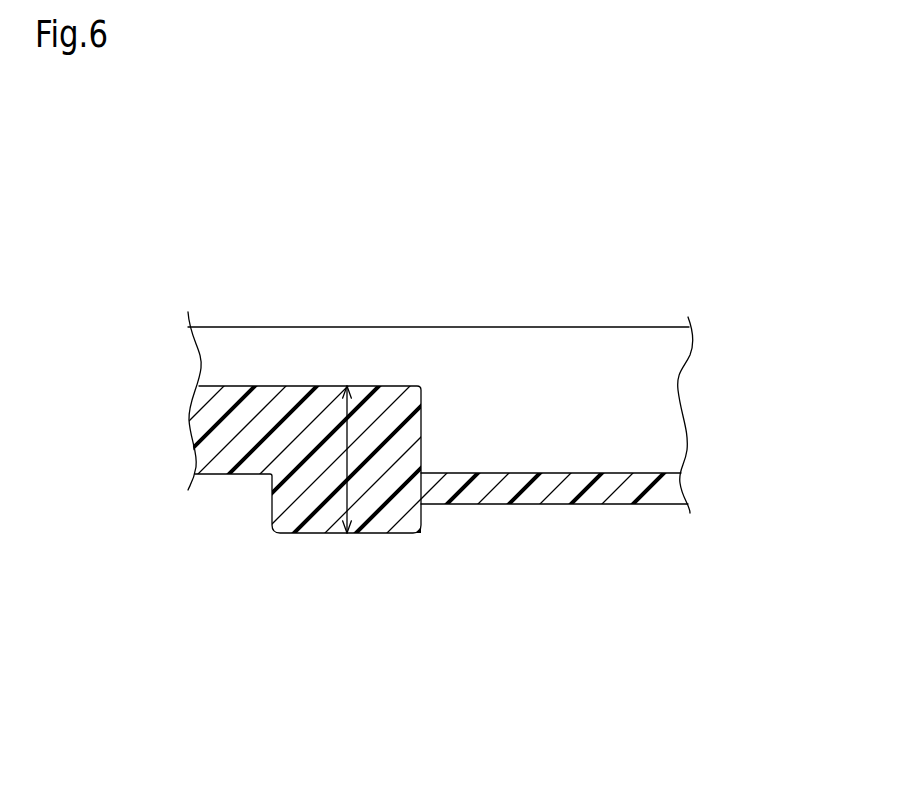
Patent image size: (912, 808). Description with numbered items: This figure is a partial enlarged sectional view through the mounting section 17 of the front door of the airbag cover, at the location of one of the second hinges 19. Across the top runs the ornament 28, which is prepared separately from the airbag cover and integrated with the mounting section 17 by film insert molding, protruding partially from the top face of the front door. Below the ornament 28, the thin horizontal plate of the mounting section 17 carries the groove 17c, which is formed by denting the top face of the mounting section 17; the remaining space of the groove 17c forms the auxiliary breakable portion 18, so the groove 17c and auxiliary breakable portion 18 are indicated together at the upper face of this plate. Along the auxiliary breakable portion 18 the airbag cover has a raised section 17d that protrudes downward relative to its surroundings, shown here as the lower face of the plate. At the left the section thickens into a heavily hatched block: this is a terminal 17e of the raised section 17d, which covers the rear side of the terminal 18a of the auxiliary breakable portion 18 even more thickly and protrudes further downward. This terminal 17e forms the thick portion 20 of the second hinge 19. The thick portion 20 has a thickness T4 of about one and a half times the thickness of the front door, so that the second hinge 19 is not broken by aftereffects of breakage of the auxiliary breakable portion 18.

The ornament 28 is at (562, 322).
The second hinge 19 is at (293, 368).
The thick portion 20 is at (289, 522).
The terminal of raised section 17e is at (262, 612).
The thickness of thick portion T4 is at (347, 467).
The terminal of auxiliary breakable portion 18a is at (421, 449).
The mounting section 17 is at (512, 528).
The groove 17c is at (590, 470).
The auxiliary breakable portion 18 is at (621, 425).
The raised section 17d is at (563, 504).